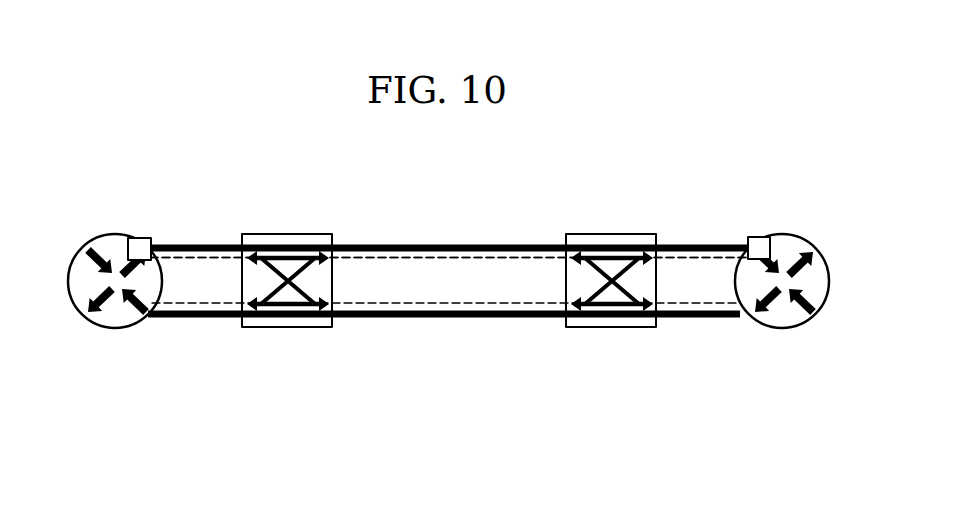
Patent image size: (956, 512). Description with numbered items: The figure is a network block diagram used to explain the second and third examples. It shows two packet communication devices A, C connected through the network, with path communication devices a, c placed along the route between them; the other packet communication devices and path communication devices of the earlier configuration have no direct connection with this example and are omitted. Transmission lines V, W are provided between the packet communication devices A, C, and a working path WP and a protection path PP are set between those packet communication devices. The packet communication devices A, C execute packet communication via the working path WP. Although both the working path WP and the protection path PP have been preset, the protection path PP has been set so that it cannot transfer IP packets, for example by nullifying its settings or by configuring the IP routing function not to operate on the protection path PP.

The packet communication device A is at (118, 329).
The packet communication device C is at (784, 329).
The path communication device a is at (290, 329).
The path communication device c is at (615, 329).
The transmission line V is at (201, 257).
The transmission line W is at (405, 302).
The working path WP is at (483, 245).
The protection path PP is at (483, 320).